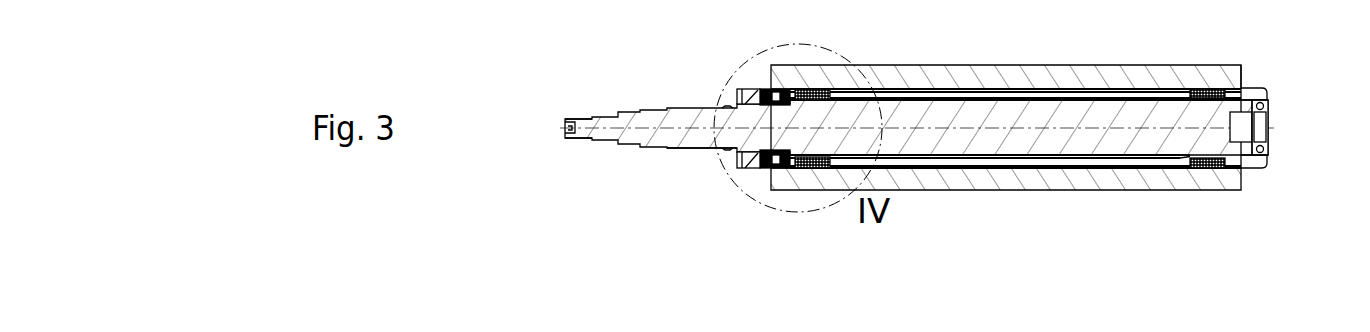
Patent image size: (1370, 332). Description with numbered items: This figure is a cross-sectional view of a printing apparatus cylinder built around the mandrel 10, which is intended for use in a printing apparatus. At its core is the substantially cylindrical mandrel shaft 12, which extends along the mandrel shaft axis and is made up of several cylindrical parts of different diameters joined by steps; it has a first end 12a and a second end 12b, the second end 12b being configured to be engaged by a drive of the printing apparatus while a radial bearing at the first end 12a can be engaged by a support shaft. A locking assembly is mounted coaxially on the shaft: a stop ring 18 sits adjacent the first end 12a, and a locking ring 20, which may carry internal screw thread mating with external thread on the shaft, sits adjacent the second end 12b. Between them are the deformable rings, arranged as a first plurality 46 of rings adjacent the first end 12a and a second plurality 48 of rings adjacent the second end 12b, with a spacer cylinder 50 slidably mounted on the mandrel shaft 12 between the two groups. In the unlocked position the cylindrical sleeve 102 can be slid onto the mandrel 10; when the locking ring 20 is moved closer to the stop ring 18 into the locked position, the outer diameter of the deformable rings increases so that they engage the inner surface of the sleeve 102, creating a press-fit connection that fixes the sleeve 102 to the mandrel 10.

The mandrel 10 is at (668, 162).
The mandrel shaft 12 is at (1103, 140).
The first end of the mandrel shaft 12a is at (1264, 75).
The second end of the mandrel shaft 12b is at (586, 101).
The stop ring 18 is at (1260, 92).
The locking ring 20 is at (745, 170).
The first plurality of deformable rings 46 is at (1209, 173).
The second plurality of deformable rings 48 is at (810, 177).
The spacer cylinder 50 is at (992, 92).
The cylindrical sleeve 102 is at (1075, 75).